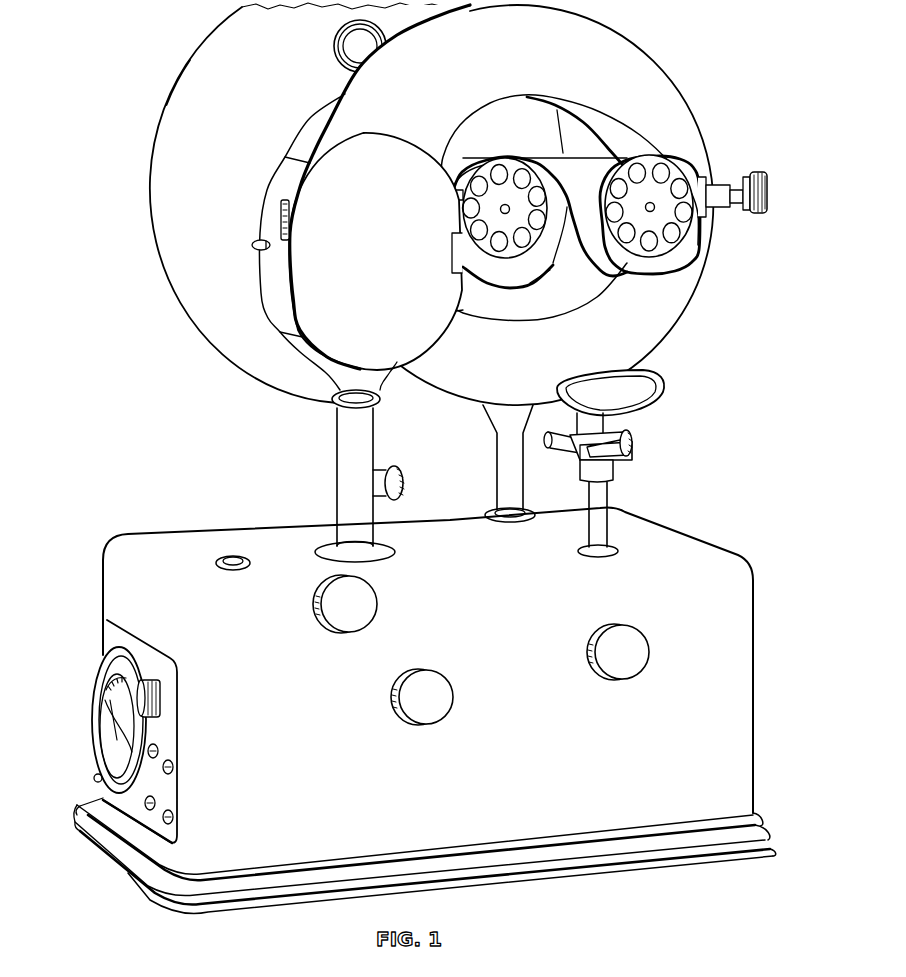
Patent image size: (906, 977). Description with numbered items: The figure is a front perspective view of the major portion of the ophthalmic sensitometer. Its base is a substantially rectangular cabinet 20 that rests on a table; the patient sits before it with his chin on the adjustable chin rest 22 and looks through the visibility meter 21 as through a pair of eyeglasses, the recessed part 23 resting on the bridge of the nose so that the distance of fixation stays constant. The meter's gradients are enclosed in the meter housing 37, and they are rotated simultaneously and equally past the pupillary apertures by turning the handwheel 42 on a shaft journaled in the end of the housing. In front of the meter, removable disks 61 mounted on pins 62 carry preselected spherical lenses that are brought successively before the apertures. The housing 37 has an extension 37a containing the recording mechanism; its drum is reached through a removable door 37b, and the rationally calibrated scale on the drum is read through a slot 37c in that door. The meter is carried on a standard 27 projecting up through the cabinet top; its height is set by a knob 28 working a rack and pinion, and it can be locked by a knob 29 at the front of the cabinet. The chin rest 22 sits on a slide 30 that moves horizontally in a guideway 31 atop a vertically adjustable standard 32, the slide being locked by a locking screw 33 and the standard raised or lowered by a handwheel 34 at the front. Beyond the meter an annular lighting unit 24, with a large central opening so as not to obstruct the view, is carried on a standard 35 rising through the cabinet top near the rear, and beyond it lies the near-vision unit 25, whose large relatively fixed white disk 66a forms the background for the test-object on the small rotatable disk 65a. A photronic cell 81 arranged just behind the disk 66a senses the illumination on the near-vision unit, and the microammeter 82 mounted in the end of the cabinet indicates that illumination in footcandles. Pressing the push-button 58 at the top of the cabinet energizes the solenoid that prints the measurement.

The cabinet 20 is at (142, 540).
The visibility meter 21 is at (592, 164).
The chin rest 22 is at (636, 385).
The recessed part 23 is at (574, 215).
The lighting unit 24 is at (642, 57).
The near-vision unit 25 is at (152, 198).
The standard 27 is at (340, 447).
The knob 28 is at (395, 715).
The knob 29 is at (338, 630).
The slide 30 is at (626, 455).
The guideway 31 is at (576, 452).
The standard 32 is at (598, 523).
The locking screw 33 is at (634, 436).
The handwheel 34 is at (637, 648).
The standard 35 is at (510, 470).
The meter housing 37 is at (548, 158).
The housing extension 37a is at (377, 146).
The removable door 37b is at (273, 273).
The slot 37c is at (288, 215).
The handwheel 42 is at (758, 176).
The push-button 58 is at (233, 556).
The disks 61 is at (515, 255).
The pins 62 is at (520, 177).
The rotatable disk 65a is at (303, 121).
The fixed disk 66a is at (178, 83).
The photronic cell 81 is at (386, 35).
The microammeter 82 is at (106, 703).